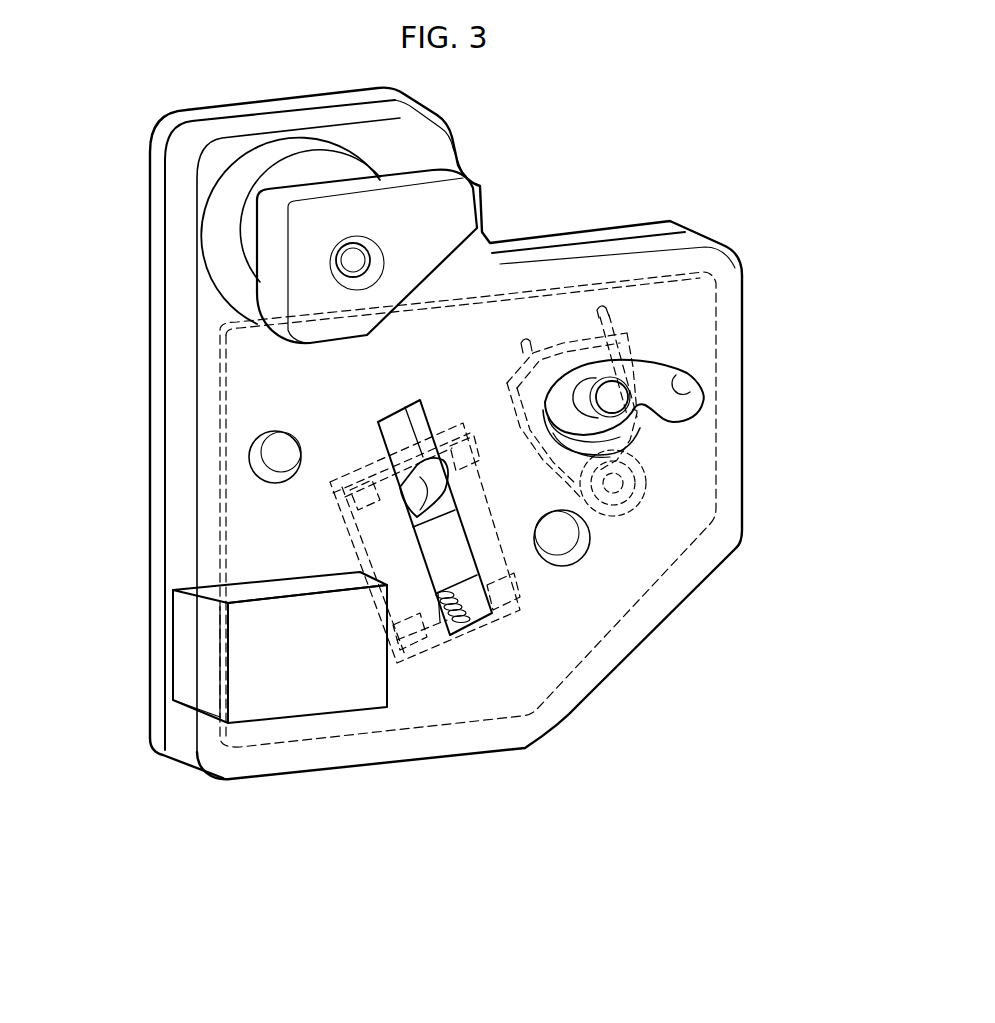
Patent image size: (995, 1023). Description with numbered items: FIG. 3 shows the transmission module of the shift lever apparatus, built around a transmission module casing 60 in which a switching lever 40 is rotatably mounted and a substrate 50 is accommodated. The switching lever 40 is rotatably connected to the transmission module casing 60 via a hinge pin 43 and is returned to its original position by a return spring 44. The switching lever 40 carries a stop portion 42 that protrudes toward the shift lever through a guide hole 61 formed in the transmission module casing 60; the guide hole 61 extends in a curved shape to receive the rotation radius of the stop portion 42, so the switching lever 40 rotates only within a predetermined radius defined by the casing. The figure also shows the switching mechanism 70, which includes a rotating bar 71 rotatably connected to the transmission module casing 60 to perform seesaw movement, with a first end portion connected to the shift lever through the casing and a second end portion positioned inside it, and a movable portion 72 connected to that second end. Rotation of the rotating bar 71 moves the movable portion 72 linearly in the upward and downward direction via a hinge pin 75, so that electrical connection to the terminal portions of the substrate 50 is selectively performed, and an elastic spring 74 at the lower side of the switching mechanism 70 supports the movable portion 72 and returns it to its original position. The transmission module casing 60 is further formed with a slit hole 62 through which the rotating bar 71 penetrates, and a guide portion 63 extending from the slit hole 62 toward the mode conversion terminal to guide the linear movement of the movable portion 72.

The switching lever 40 is at (655, 405).
The stop portion 42 is at (614, 396).
The hinge pin 43 is at (613, 483).
The return spring 44 is at (627, 443).
The substrate 50 is at (263, 382).
The transmission module casing 60 is at (579, 216).
The guide hole 61 is at (640, 399).
The slit hole 62 is at (253, 453).
The guide portion 63 is at (430, 603).
The switching mechanism 70 is at (700, 737).
The rotating bar 71 is at (435, 493).
The movable portion 72 is at (442, 543).
The elastic spring 74 is at (462, 605).
The hinge pin 75 is at (353, 528).